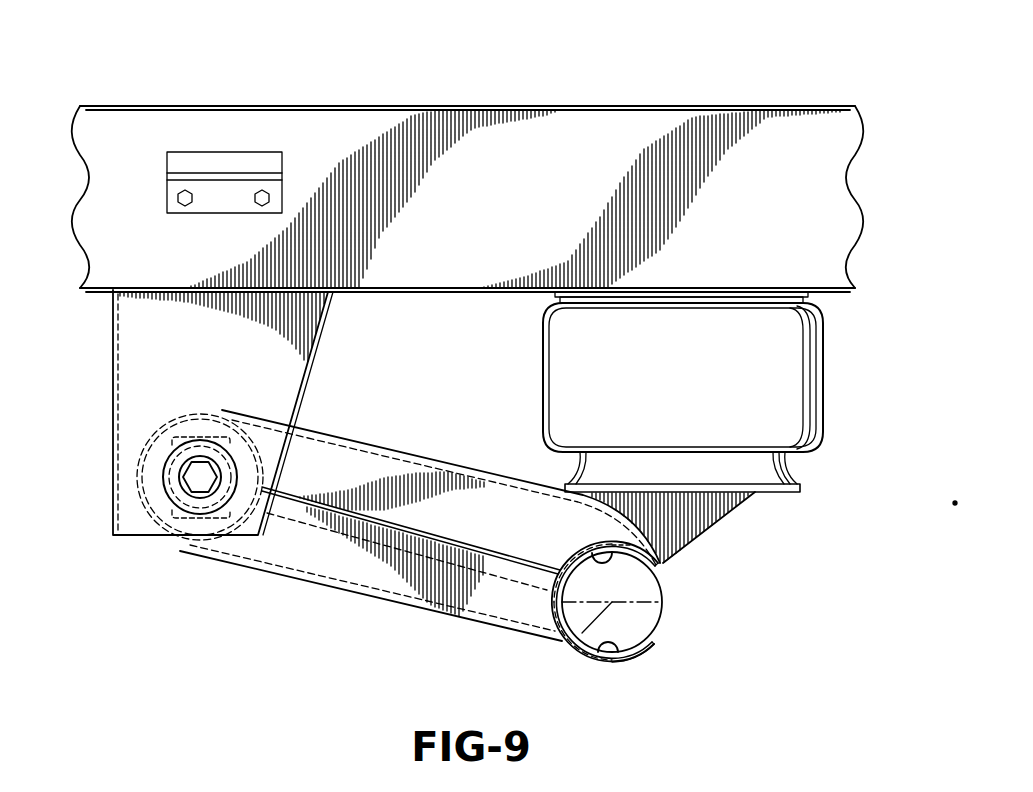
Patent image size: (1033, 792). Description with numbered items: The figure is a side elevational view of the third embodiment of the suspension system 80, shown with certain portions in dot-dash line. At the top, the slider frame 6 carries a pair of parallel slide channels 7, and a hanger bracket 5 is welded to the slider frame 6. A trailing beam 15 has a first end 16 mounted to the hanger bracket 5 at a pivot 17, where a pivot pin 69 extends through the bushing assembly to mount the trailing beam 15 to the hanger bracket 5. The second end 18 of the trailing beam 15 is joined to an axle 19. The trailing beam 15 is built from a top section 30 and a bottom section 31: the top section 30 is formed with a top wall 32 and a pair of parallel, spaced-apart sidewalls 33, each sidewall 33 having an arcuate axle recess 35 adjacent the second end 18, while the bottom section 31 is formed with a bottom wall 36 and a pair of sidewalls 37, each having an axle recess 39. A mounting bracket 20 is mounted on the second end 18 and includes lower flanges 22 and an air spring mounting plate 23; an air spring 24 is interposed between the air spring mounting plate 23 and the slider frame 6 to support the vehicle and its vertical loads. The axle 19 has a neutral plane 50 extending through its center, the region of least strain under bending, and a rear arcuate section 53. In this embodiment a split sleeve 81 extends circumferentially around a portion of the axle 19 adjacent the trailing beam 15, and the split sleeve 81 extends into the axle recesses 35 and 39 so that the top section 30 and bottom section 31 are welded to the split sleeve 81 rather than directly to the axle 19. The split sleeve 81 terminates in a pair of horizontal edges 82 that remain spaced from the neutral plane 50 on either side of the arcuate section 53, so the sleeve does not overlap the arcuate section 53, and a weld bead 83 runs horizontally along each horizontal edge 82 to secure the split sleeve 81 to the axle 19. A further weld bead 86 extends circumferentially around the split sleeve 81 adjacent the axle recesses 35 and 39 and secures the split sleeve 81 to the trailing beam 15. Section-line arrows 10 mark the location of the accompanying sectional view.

The hanger bracket 5 is at (133, 406).
The slider frame 6 is at (748, 102).
The slide channels 7 is at (613, 122).
The section line indicator 10 is at (373, 358).
The trailing beam 15 is at (442, 462).
The first end 16 is at (246, 405).
The pivot 17 is at (186, 484).
The second end 18 is at (645, 668).
The axle 19 is at (652, 650).
The mounting bracket 20 is at (724, 538).
The lower flanges 22 is at (737, 508).
The air spring mounting plate 23 is at (790, 493).
The air spring 24 is at (823, 349).
The top section 30 is at (488, 470).
The bottom section 31 is at (380, 611).
The top wall 32 is at (403, 458).
The sidewalls 33 is at (318, 452).
The arcuate axle recess 35 is at (612, 548).
The bottom wall 36 is at (503, 633).
The sidewalls 37 is at (323, 562).
The axle recess 39 is at (616, 662).
The neutral plane 50 is at (577, 644).
The rear arcuate section 53 is at (663, 612).
The pivot pin 69 is at (205, 478).
The suspension system 80 is at (682, 682).
The split sleeve 81 is at (547, 623).
The horizontal edges 82 is at (663, 578).
The weld bead 83 is at (663, 590).
The weld bead 86 is at (577, 548).